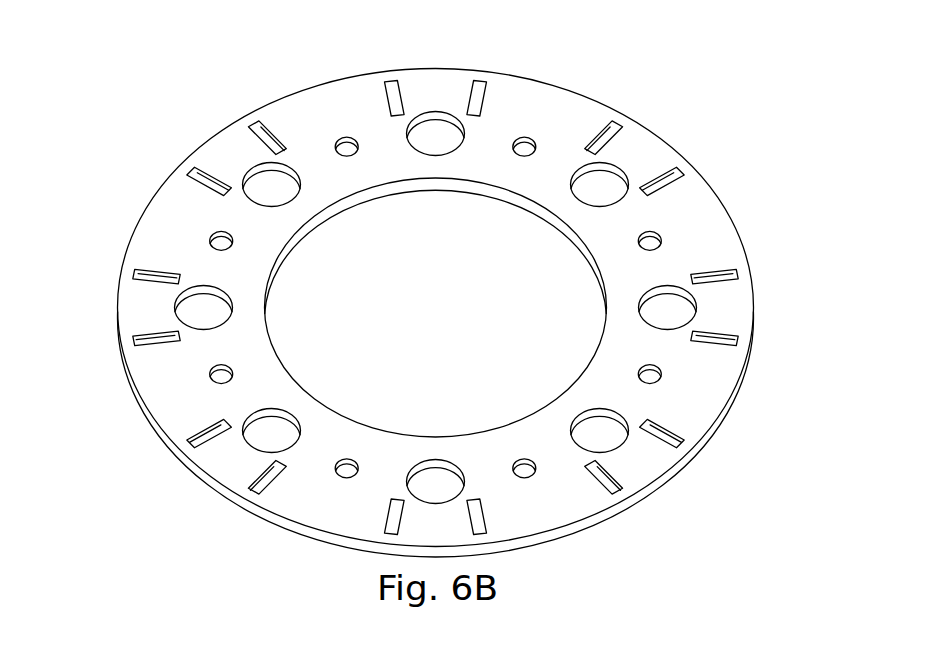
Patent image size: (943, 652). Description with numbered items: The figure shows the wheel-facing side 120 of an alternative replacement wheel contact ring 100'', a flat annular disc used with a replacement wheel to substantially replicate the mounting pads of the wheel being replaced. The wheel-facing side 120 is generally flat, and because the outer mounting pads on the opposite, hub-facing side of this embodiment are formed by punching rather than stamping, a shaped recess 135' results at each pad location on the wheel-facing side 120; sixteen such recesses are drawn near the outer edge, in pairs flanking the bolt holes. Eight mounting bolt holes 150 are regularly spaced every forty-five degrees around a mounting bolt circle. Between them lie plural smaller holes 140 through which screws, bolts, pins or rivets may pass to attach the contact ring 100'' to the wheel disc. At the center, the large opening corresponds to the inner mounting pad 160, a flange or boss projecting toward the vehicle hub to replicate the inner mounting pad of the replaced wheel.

The replacement wheel contact ring 100'' is at (430, 305).
The wheel-facing side 120 is at (543, 92).
The shaped recess 135' is at (459, 325).
The holes 140 is at (657, 233).
The mounting bolt holes 150 is at (185, 312).
The inner mounting pad 160 is at (460, 183).